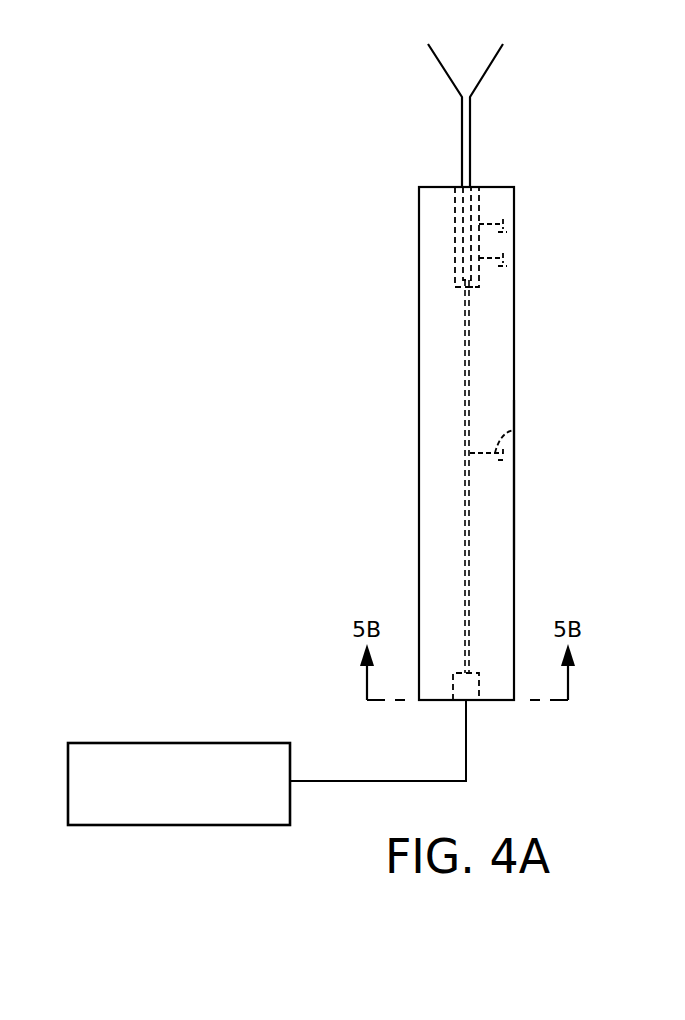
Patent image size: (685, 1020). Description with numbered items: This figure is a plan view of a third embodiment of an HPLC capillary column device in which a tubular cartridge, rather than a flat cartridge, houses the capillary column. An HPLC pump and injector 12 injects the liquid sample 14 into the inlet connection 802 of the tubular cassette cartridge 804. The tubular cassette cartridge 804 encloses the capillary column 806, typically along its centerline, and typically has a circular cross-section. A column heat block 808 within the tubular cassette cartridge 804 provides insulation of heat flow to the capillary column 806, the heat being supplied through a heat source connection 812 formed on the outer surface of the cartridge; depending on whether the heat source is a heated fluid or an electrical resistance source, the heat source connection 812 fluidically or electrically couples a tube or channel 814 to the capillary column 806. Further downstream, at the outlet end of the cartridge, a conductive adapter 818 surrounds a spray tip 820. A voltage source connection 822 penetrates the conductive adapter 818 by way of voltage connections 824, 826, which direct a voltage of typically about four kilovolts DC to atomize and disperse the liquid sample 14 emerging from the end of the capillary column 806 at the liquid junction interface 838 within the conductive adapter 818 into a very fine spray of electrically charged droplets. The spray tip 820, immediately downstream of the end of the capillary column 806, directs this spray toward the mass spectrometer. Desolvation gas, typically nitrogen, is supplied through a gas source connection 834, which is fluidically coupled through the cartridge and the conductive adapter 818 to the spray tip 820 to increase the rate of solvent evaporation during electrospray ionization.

The HPLC pump and injector 12 is at (187, 825).
The liquid sample 14 is at (367, 781).
The inlet connection 802 is at (468, 703).
The tubular cassette cartridge 804 is at (419, 417).
The capillary column 806 is at (470, 592).
The column heat block 808 is at (497, 528).
The heat source connection 812 is at (514, 455).
The tube or channel 814 is at (516, 429).
The conductive adapter 818 is at (455, 226).
The spray tip 820 is at (472, 100).
The voltage source connection 822 is at (514, 260).
The voltage connection 824 is at (479, 262).
The voltage connection 826 is at (560, 295).
The gas source connection 834 is at (514, 222).
The liquid junction interface 838 is at (455, 268).